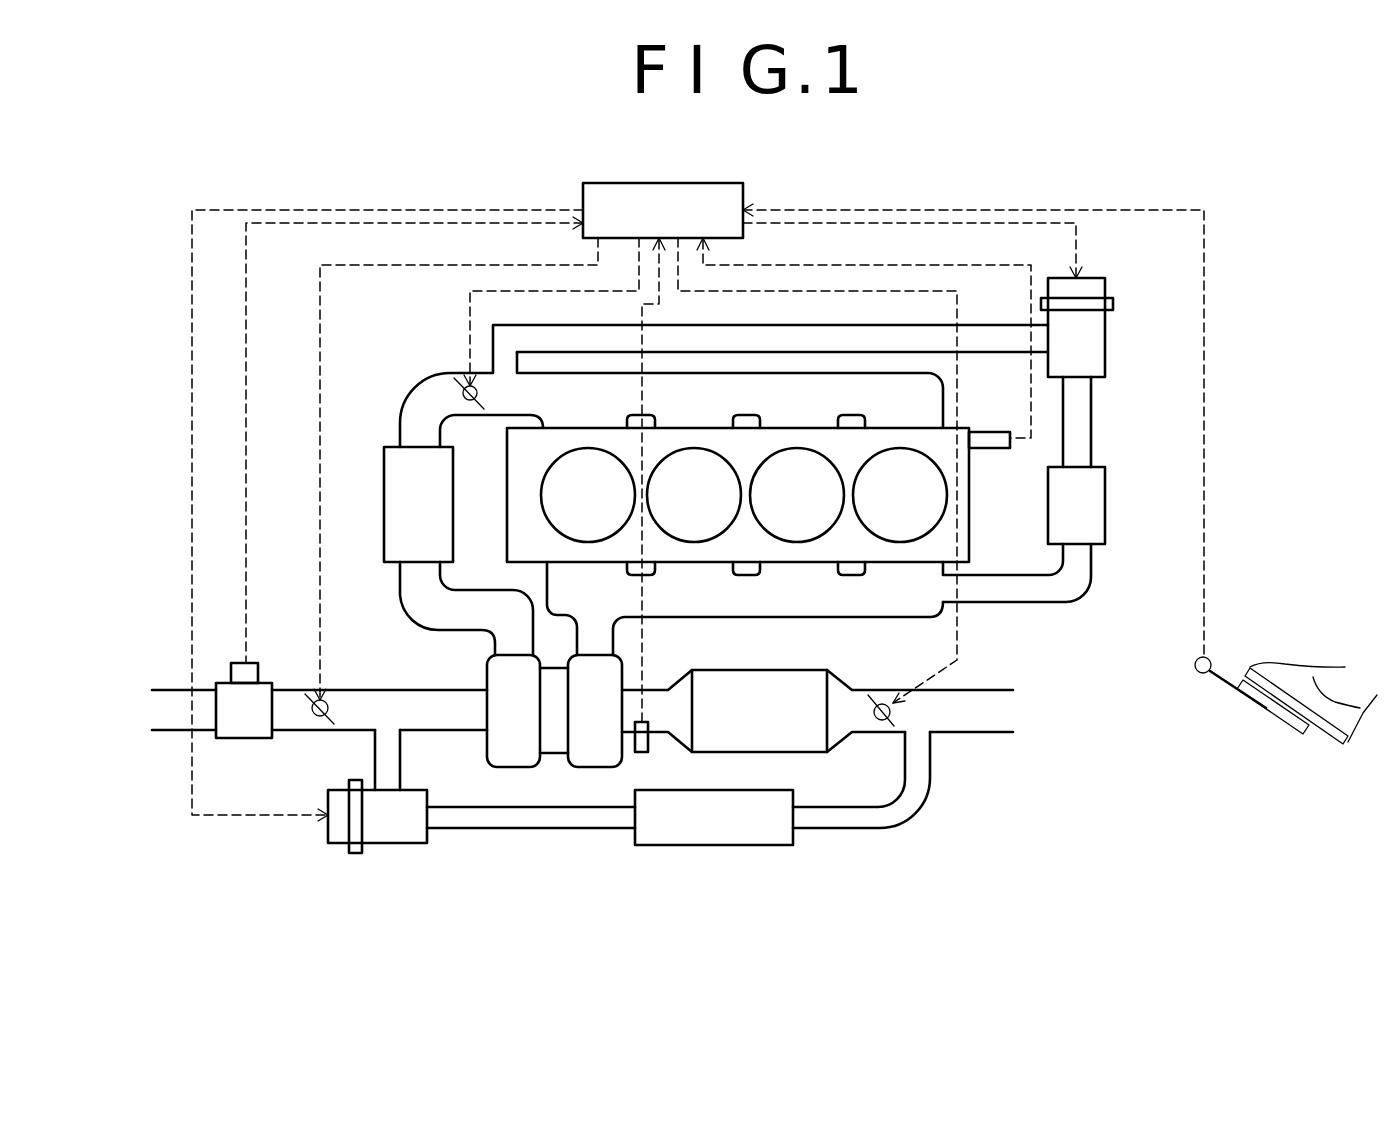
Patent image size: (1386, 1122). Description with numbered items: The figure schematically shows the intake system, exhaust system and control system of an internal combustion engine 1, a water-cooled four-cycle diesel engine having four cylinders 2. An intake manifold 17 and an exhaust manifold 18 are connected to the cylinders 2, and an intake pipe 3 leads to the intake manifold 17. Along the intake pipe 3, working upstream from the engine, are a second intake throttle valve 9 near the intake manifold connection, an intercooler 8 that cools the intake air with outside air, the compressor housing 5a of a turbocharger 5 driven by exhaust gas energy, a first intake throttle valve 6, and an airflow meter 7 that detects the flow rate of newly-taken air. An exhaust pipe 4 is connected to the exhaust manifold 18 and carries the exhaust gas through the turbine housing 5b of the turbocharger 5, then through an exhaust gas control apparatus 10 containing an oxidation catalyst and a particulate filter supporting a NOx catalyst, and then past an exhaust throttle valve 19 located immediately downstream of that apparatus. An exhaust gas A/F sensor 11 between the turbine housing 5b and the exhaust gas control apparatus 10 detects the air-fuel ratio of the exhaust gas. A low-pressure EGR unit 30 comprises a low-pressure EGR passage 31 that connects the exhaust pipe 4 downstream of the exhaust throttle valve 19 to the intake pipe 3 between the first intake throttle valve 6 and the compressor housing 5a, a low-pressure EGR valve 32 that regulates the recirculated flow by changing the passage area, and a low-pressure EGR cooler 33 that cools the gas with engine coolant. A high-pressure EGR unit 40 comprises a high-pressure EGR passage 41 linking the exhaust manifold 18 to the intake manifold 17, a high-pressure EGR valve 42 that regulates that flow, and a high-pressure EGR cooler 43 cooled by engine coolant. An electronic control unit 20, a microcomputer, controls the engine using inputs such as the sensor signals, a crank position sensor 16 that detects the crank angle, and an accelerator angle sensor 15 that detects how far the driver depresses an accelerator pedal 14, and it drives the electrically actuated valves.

The internal combustion engine 1 is at (435, 365).
The cylinders 2 is at (541, 495).
The intake pipe 3 is at (400, 425).
The exhaust pipe 4 is at (613, 642).
The turbocharger 5 is at (552, 806).
The compressor housing 5a is at (513, 767).
The turbine housing 5b is at (583, 767).
The first intake throttle valve 6 is at (315, 716).
The airflow meter 7 is at (258, 676).
The intercooler 8 is at (384, 480).
The second intake throttle valve 9 is at (468, 402).
The exhaust gas control apparatus 10 is at (818, 752).
The exhaust gas A/F sensor 11 is at (650, 743).
The accelerator pedal 14 is at (1290, 715).
The accelerator angle sensor 15 is at (1210, 660).
The crank position sensor 16 is at (990, 449).
The intake manifold 17 is at (945, 402).
The exhaust manifold 18 is at (888, 620).
The exhaust throttle valve 19 is at (878, 722).
The electronic control unit 20 is at (583, 197).
The low-pressure EGR unit 30 is at (312, 840).
The low-pressure EGR passage 31 is at (823, 830).
The low-pressure EGR valve 32 is at (370, 845).
The low-pressure EGR cooler 33 is at (745, 848).
The high-pressure EGR unit 40 is at (1102, 268).
The high-pressure EGR passage 41 is at (1000, 603).
The high-pressure EGR valve 42 is at (1105, 320).
The high-pressure EGR cooler 43 is at (1105, 520).